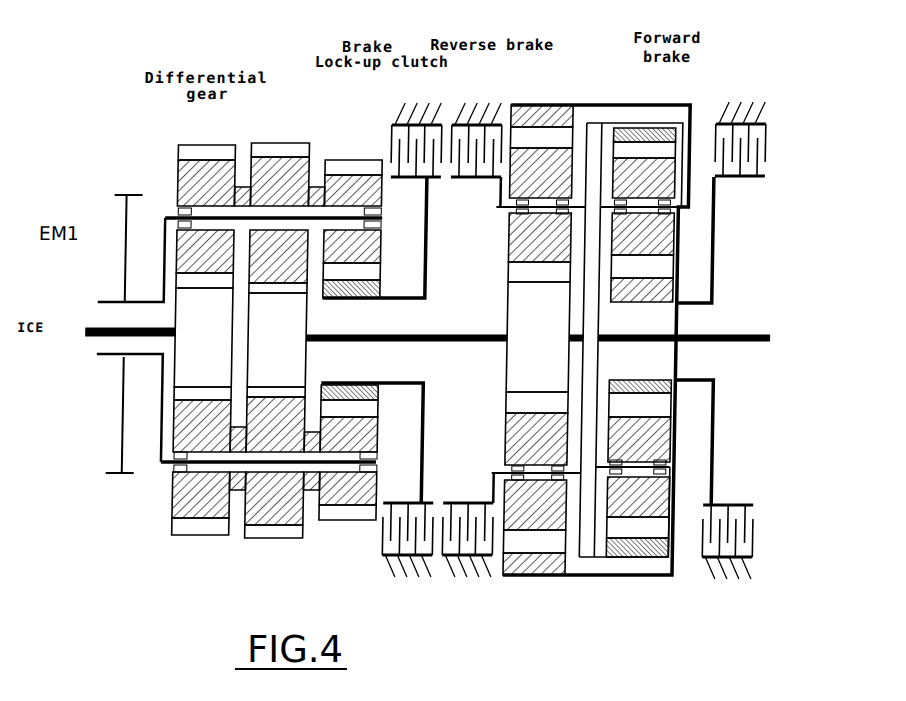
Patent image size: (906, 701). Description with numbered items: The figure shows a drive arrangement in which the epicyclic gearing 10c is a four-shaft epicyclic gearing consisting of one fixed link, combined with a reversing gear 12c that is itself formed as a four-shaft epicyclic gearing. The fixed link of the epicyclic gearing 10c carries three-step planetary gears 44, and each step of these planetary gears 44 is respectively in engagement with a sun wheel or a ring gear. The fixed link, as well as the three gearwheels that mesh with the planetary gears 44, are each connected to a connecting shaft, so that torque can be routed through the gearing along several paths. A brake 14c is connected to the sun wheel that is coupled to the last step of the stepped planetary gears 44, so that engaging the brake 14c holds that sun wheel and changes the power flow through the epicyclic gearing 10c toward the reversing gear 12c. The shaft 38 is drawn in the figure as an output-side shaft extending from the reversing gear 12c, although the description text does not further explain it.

The epicyclic gearing 10c is at (446, 88).
The reversing gear 12c is at (773, 96).
The brake 14c is at (384, 541).
The output shaft 38 is at (733, 334).
The three-step planetary gears 44 is at (182, 186).